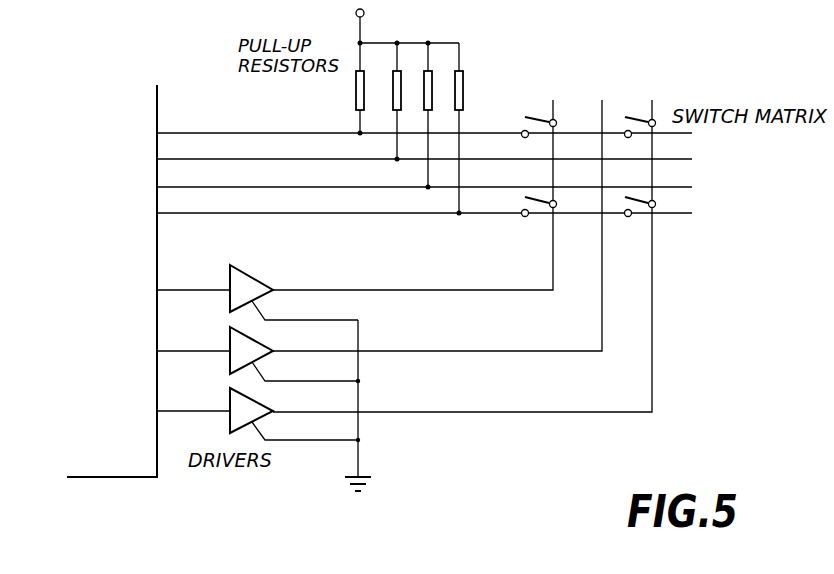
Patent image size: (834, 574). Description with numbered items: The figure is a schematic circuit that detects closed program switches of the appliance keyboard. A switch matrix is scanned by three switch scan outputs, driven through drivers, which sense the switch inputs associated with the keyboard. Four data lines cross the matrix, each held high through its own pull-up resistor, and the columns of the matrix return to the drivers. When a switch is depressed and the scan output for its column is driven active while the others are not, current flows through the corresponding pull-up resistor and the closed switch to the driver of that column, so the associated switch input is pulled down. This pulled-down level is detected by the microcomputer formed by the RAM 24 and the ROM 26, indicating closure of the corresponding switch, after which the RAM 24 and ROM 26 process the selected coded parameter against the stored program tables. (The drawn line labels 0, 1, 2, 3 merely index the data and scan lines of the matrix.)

The RAM 24 is at (162, 281).
The ROM 26 is at (140, 246).
The data line D0 0 is at (424, 122).
The data line D1 1 is at (424, 149).
The data line D2 2 is at (424, 176).
The data line D3 3 is at (424, 203).